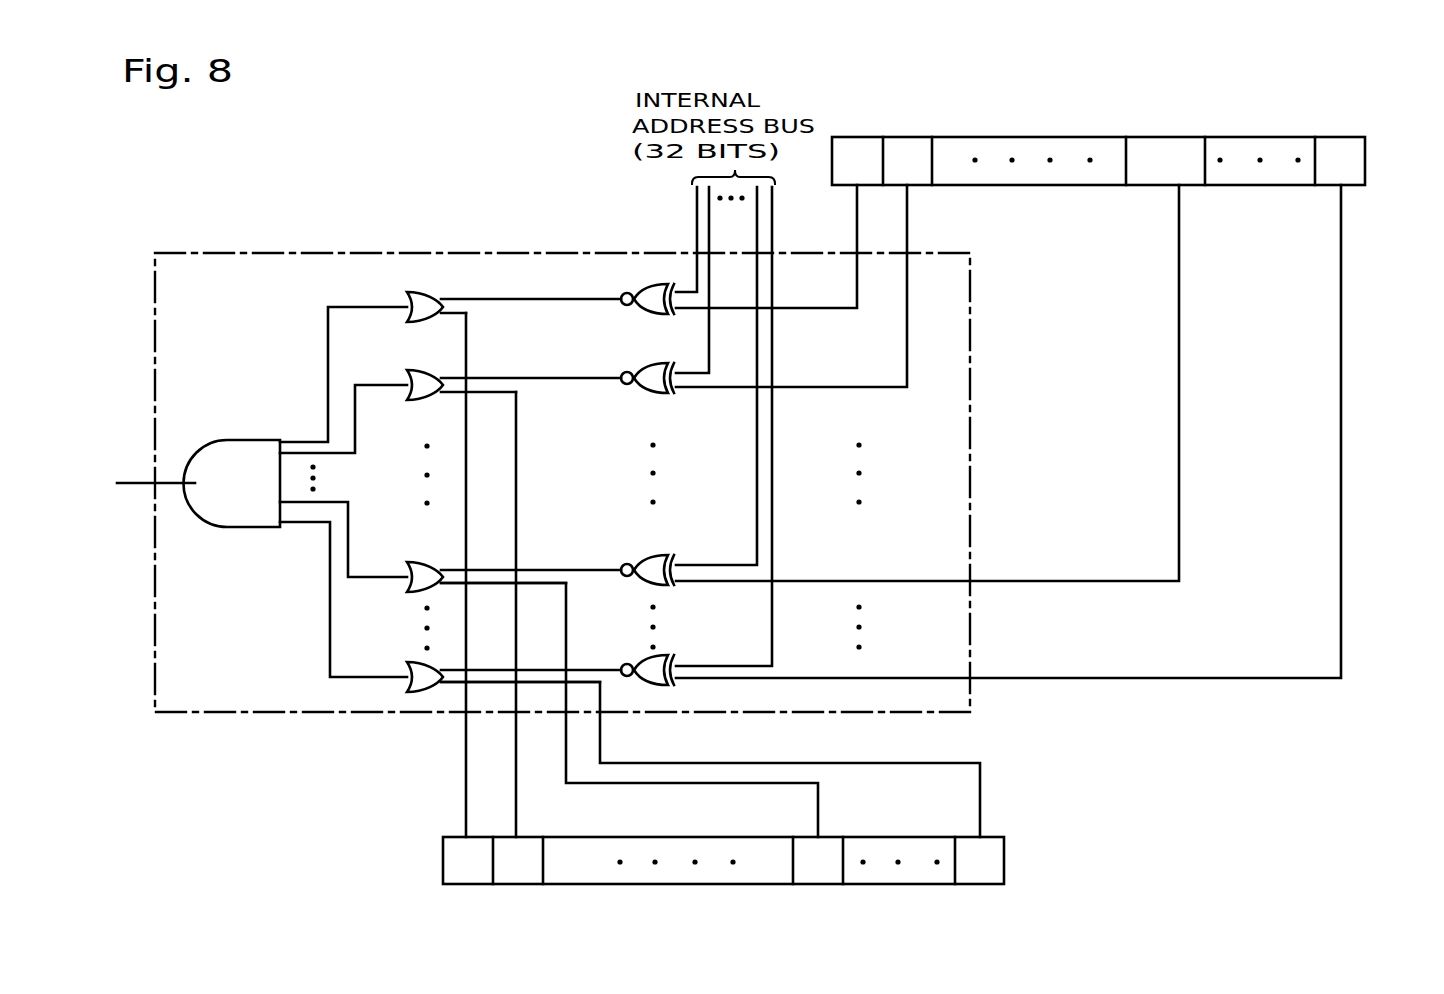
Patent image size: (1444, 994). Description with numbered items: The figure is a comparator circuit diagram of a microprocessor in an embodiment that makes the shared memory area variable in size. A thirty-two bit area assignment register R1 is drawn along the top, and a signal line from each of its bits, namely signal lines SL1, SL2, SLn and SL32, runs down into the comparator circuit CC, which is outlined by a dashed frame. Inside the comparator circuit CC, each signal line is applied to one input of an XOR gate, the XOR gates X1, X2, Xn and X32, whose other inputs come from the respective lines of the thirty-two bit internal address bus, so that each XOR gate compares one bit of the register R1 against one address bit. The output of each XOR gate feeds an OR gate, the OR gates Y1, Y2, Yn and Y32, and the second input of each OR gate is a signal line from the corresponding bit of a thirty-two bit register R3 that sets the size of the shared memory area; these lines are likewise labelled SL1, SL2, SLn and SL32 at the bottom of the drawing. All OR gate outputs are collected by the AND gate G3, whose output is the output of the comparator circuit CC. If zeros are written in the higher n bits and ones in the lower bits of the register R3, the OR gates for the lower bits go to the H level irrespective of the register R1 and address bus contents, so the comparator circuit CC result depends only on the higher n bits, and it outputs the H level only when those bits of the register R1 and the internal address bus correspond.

The comparator circuit CC is at (770, 698).
The register R1 is at (1290, 143).
The register R3 is at (996, 870).
The AND gate G3 is at (266, 527).
The OR gate Y1 is at (430, 290).
The OR gate Y2 is at (430, 372).
The OR gate Yn is at (430, 562).
The OR gate Y32 is at (430, 662).
The XOR gate X1 is at (644, 282).
The XOR gate X2 is at (645, 362).
The XOR gate Xn is at (650, 557).
The XOR gate X32 is at (650, 658).
The signal line SL1 is at (665, 511).
The signal line SL2 is at (715, 511).
The signal line SLn is at (825, 511).
The signal line SL32 is at (906, 511).